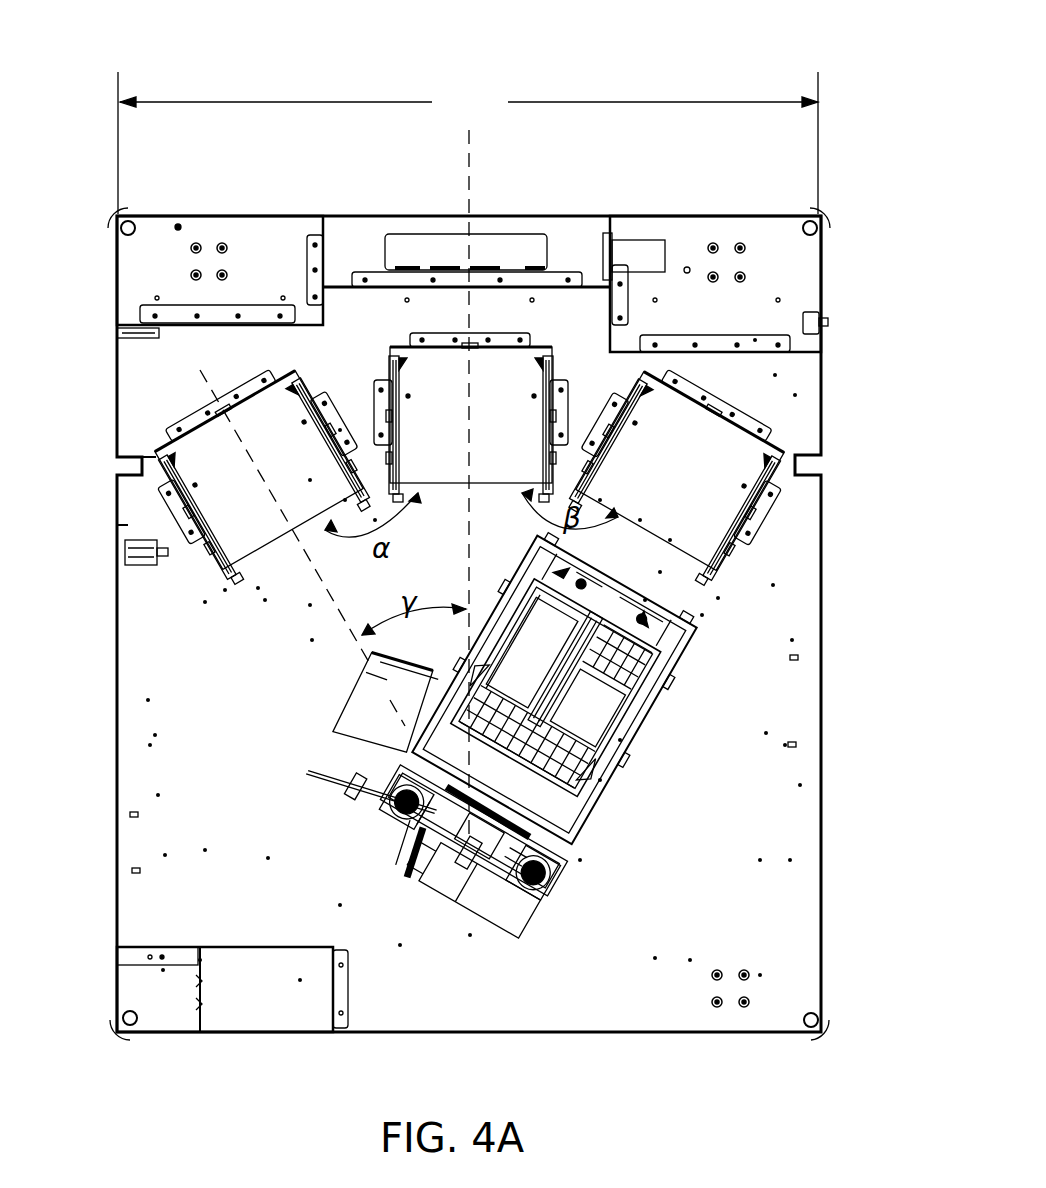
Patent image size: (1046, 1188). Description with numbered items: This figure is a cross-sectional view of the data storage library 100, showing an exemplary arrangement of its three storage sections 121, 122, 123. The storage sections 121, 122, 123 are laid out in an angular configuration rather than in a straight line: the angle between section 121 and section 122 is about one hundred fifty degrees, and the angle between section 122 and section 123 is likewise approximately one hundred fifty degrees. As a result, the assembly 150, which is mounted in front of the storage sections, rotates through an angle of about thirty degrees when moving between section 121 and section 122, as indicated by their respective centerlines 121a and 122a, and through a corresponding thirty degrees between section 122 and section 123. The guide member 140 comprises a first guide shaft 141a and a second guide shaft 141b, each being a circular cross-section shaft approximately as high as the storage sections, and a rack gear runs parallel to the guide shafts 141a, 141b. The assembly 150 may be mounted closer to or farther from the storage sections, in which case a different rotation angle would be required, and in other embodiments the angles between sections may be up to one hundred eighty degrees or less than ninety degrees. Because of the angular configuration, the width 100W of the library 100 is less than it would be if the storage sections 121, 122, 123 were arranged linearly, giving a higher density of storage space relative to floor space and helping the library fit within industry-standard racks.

The data storage library 100 is at (688, 88).
The width 100W is at (468, 143).
The storage section 121 is at (165, 452).
The centerline 121a is at (336, 606).
The storage section 122 is at (412, 368).
The centerline 122a is at (469, 158).
The storage section 123 is at (775, 450).
The guide member 140 is at (520, 930).
The first guide shaft 141a is at (398, 812).
The second guide shaft 141b is at (546, 880).
The assembly 150 is at (660, 688).